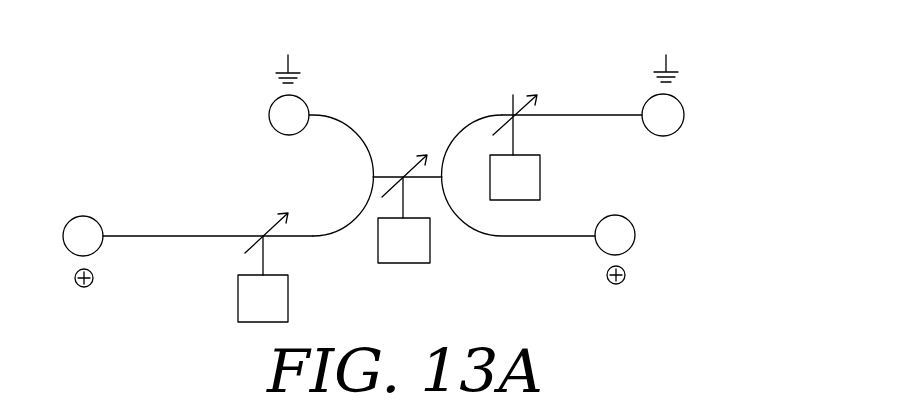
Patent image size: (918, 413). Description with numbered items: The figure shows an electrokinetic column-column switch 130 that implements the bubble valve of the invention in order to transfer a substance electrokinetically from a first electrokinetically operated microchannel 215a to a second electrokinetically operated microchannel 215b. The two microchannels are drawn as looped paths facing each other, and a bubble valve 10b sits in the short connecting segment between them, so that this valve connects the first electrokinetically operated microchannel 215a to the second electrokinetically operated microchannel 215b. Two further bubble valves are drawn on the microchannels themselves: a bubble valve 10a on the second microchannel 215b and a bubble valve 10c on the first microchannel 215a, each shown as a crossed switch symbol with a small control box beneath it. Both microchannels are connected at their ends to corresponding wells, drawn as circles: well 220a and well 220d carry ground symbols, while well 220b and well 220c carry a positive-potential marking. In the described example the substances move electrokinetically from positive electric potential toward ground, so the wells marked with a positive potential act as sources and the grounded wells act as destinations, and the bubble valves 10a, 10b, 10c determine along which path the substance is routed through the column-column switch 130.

The column-column switch 130 is at (423, 90).
The bubble valve 10a is at (279, 311).
The bubble valve 10b is at (420, 252).
The bubble valve 10c is at (531, 189).
The first electrokinetically operated microchannel 215a is at (550, 112).
The second electrokinetically operated microchannel 215b is at (175, 234).
The well 220a is at (673, 125).
The well 220b is at (87, 220).
The well 220c is at (625, 234).
The well 220d is at (280, 108).